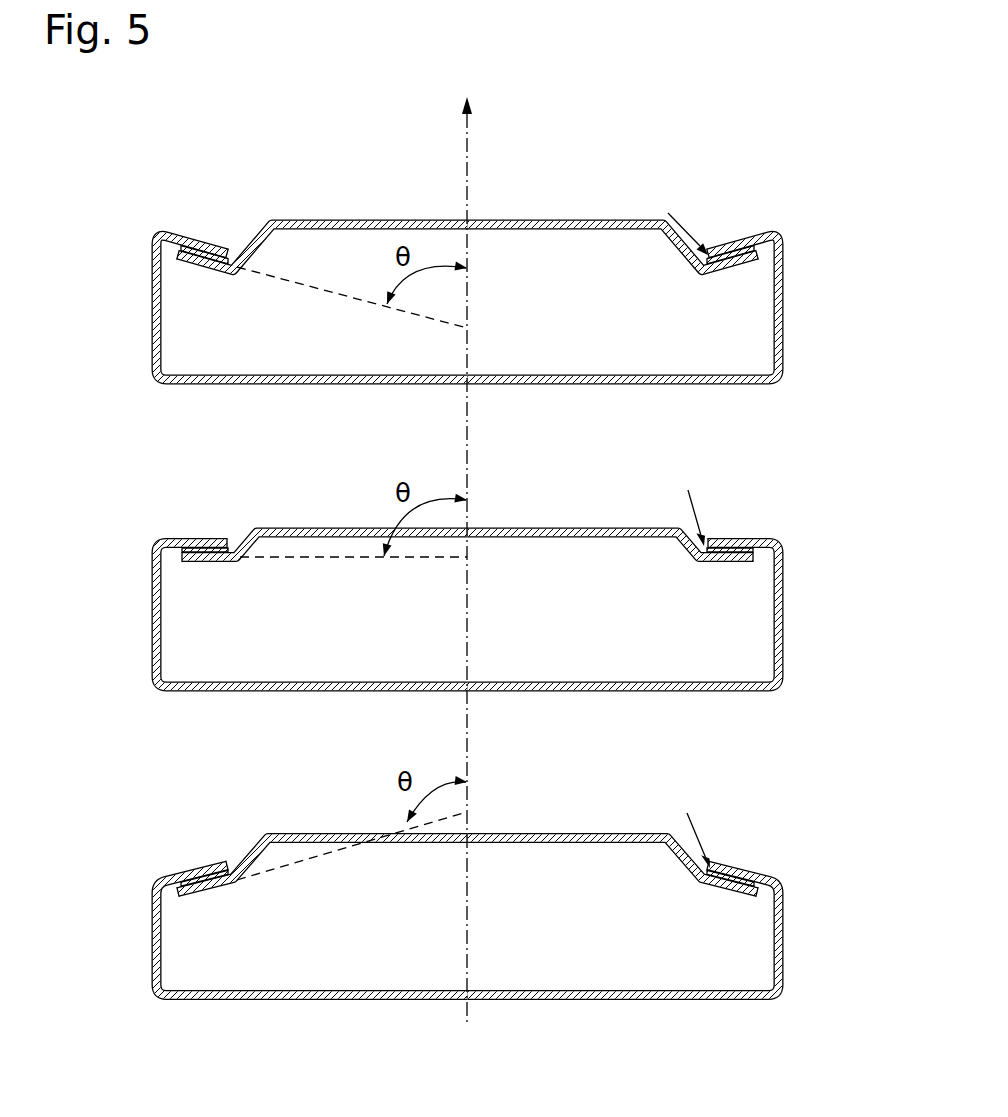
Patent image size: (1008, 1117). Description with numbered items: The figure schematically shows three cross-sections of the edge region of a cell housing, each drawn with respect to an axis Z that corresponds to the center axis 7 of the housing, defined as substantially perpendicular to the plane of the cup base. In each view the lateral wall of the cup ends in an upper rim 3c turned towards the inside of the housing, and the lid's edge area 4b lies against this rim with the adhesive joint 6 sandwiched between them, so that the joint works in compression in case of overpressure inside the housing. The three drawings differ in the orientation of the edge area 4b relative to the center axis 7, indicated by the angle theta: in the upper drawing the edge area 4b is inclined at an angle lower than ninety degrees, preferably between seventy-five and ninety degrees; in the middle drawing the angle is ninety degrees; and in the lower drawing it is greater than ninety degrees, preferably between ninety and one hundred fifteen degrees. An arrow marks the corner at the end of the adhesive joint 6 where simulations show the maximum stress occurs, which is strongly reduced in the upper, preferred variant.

The upper rim 3c is at (187, 232).
The edge area 4b is at (193, 258).
The adhesive joint 6 is at (222, 252).
The center axis 7 is at (467, 149).